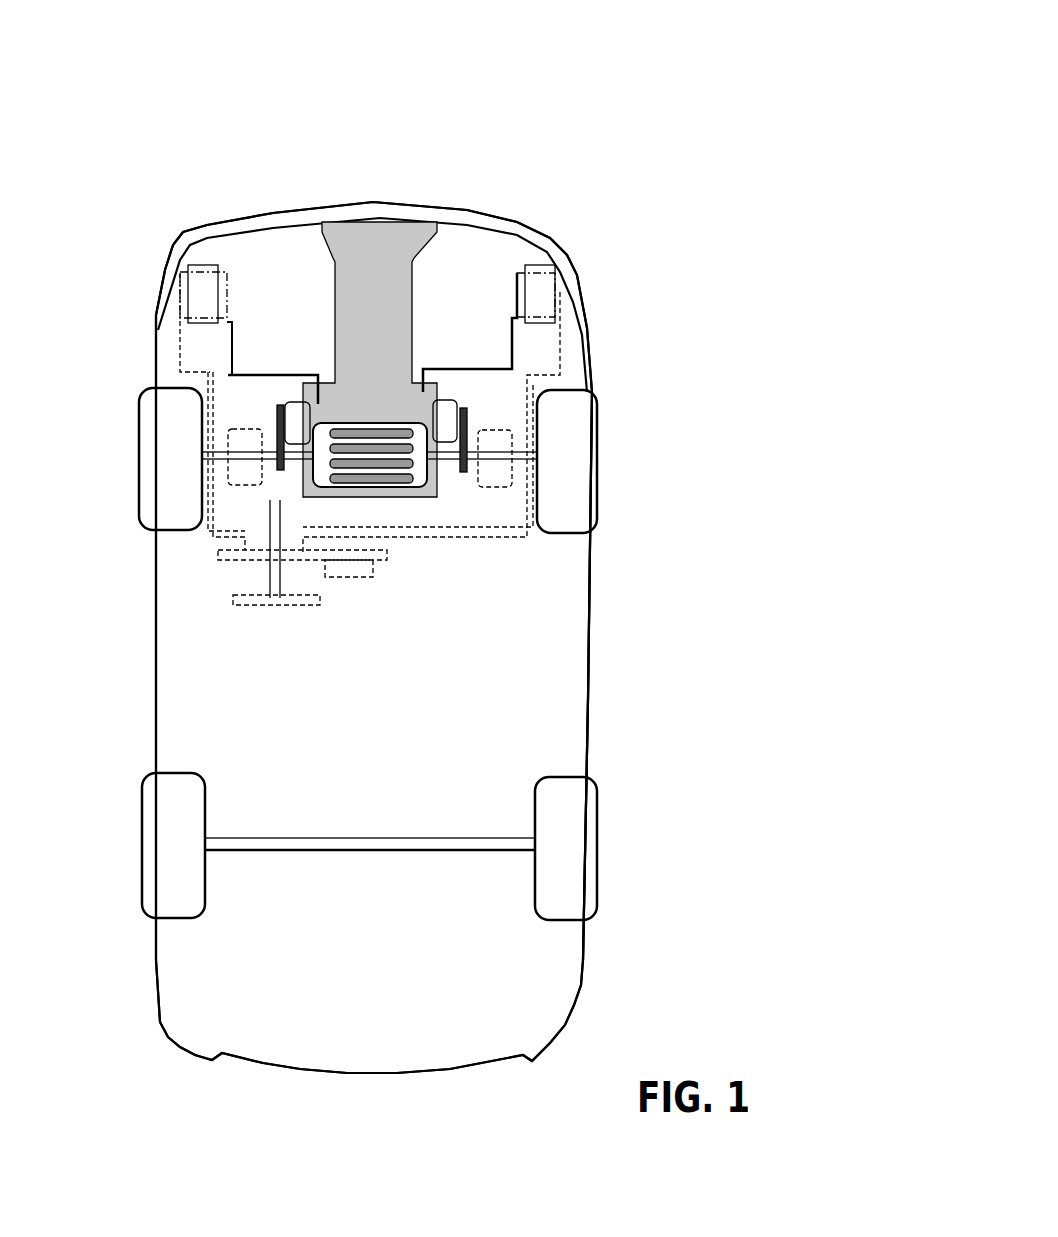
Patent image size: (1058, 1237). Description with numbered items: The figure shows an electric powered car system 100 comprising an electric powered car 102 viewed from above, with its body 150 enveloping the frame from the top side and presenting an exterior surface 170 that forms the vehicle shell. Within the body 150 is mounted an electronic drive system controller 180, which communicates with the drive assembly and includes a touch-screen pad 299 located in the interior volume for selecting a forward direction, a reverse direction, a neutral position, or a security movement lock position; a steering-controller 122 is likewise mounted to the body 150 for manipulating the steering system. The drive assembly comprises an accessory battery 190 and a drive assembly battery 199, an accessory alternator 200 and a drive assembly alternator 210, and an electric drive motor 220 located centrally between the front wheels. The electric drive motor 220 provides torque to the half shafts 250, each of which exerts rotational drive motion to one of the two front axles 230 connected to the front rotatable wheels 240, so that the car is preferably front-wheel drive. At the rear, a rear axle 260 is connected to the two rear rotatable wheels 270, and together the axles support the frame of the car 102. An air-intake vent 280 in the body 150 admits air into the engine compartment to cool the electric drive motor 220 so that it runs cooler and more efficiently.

The electric powered car system 100 is at (650, 108).
The electric powered car 102 is at (680, 162).
The steering-controller 122 is at (259, 606).
The body 150 is at (585, 702).
The exterior surface 170 is at (585, 747).
The electronic drive system controller 180 is at (365, 579).
The accessory battery 190 is at (558, 290).
The drive assembly battery 199 is at (183, 288).
The accessory alternator 200 is at (461, 395).
The drive assembly alternator 210 is at (283, 396).
The electric drive motor 220 is at (421, 499).
The front axles 230 is at (218, 468).
The front rotatable wheels 240 is at (139, 467).
The half shaft 250 is at (297, 467).
The rear axle 260 is at (480, 858).
The rear rotatable wheels 270 is at (140, 830).
The air-intake vent 280 is at (425, 241).
The touch-screen pad 299 is at (345, 579).